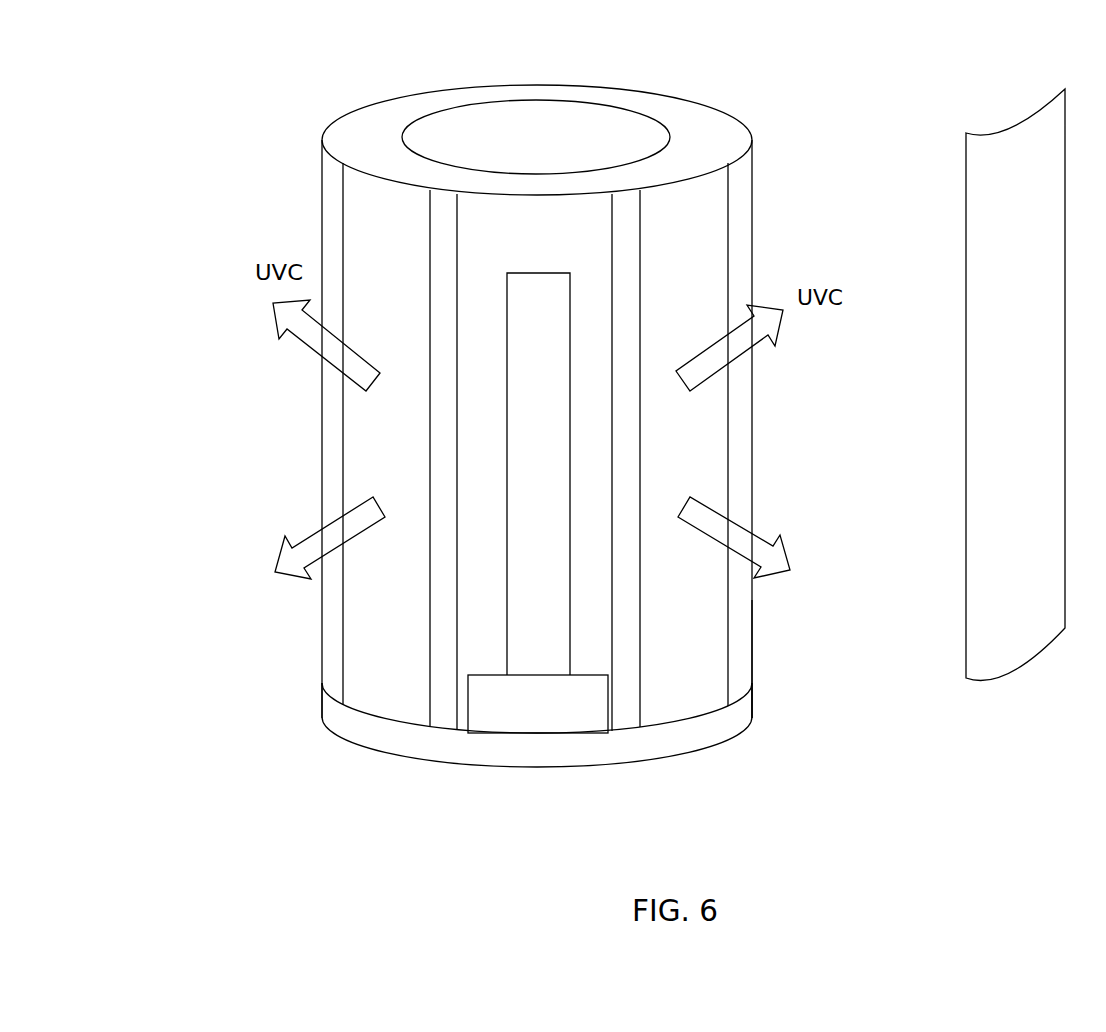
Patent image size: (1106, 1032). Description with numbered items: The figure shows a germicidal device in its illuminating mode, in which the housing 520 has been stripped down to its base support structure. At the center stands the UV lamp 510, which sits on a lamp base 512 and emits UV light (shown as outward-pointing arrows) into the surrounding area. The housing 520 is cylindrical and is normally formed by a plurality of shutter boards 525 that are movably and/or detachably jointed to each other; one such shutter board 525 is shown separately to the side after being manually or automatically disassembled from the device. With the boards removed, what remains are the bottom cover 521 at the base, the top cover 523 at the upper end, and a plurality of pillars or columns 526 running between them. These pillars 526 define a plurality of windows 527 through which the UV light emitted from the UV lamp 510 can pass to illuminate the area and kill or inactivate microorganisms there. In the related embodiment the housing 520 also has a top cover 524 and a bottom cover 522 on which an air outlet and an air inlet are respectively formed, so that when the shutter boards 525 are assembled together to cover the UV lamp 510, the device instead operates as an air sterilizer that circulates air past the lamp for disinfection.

The UV lamp 510 is at (528, 540).
The lamp base 512 is at (530, 720).
The housing 520 is at (358, 460).
The bottom cover 521 is at (573, 773).
The bottom cover 522 is at (733, 722).
The top cover 523 is at (570, 133).
The top cover 524 is at (373, 153).
The shutter board 525 is at (1015, 658).
The pillar 526 is at (753, 627).
The window 527 is at (687, 283).